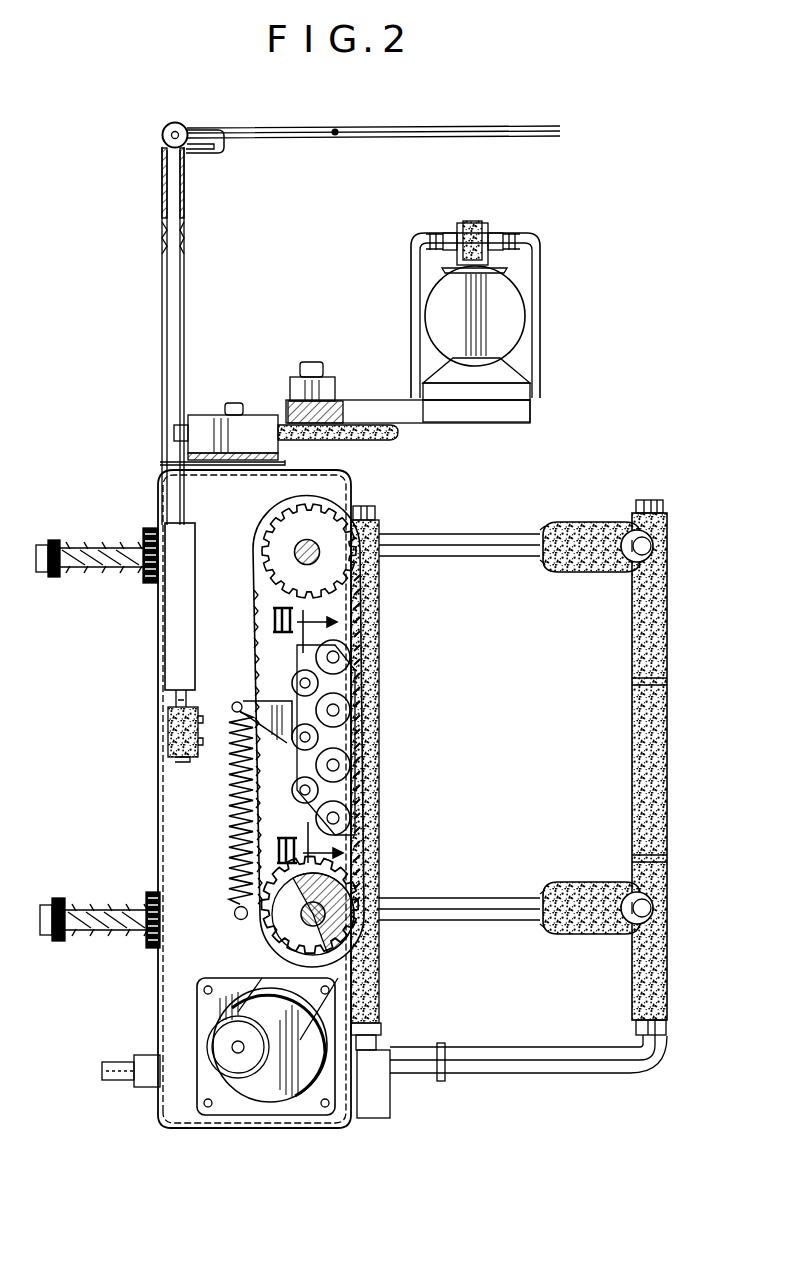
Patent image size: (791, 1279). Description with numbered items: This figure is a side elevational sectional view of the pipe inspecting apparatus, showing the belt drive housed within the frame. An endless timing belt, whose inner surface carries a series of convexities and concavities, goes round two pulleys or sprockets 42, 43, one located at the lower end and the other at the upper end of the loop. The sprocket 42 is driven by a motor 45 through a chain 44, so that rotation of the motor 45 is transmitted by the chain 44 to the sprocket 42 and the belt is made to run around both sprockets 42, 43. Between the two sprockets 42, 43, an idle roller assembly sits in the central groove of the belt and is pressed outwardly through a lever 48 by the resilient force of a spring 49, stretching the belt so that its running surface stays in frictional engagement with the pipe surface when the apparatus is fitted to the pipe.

The sprocket 42 is at (360, 905).
The sprocket 43 is at (283, 518).
The chain 44 is at (250, 955).
The motor 45 is at (278, 1105).
The lever 48 is at (287, 700).
The spring 49 is at (232, 838).